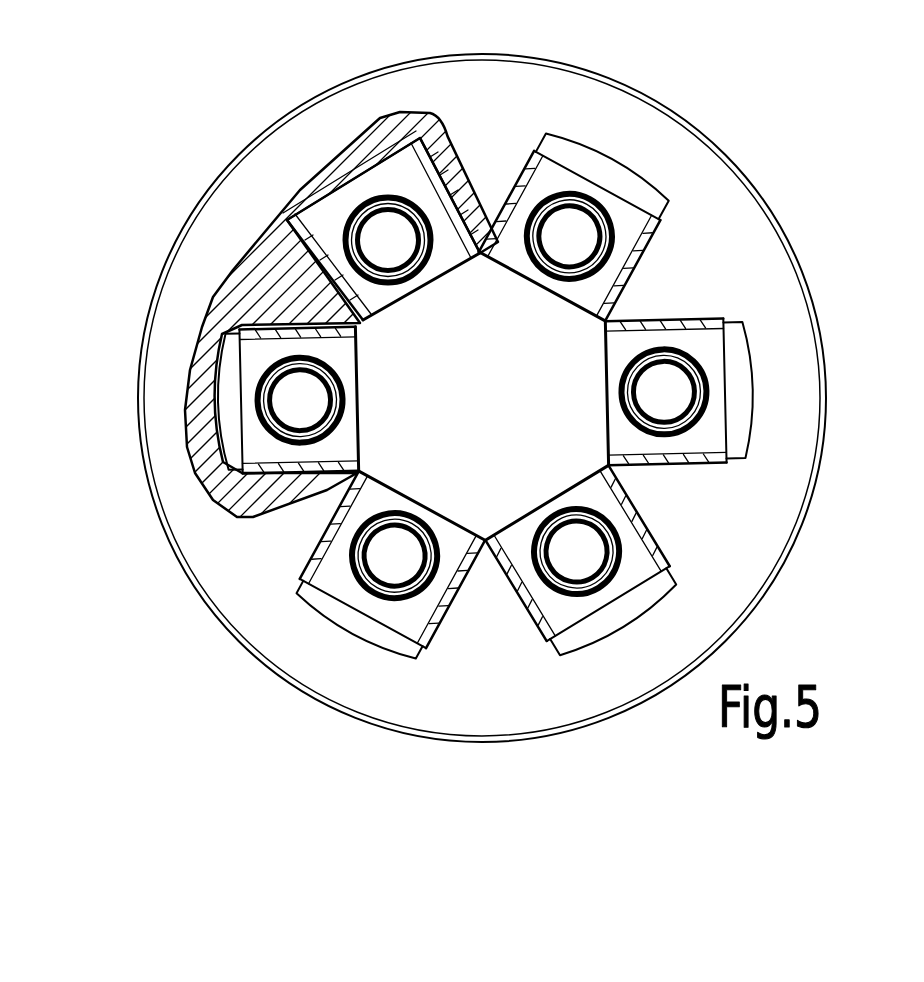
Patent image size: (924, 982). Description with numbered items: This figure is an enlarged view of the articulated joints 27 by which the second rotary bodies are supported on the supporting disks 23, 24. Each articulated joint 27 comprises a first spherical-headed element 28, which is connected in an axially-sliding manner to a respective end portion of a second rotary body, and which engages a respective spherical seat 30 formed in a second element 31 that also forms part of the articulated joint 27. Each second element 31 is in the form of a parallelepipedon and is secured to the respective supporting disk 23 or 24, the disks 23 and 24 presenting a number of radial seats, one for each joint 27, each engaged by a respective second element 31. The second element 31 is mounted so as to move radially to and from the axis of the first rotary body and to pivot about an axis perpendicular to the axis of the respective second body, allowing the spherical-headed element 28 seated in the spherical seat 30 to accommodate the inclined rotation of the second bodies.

The supporting disk 23 is at (517, 398).
The supporting disk 24 is at (772, 550).
The articulated joint 27 is at (446, 286).
The first spherical-headed element 28 is at (415, 268).
The spherical seat 30 is at (463, 180).
The second element 31 is at (470, 408).